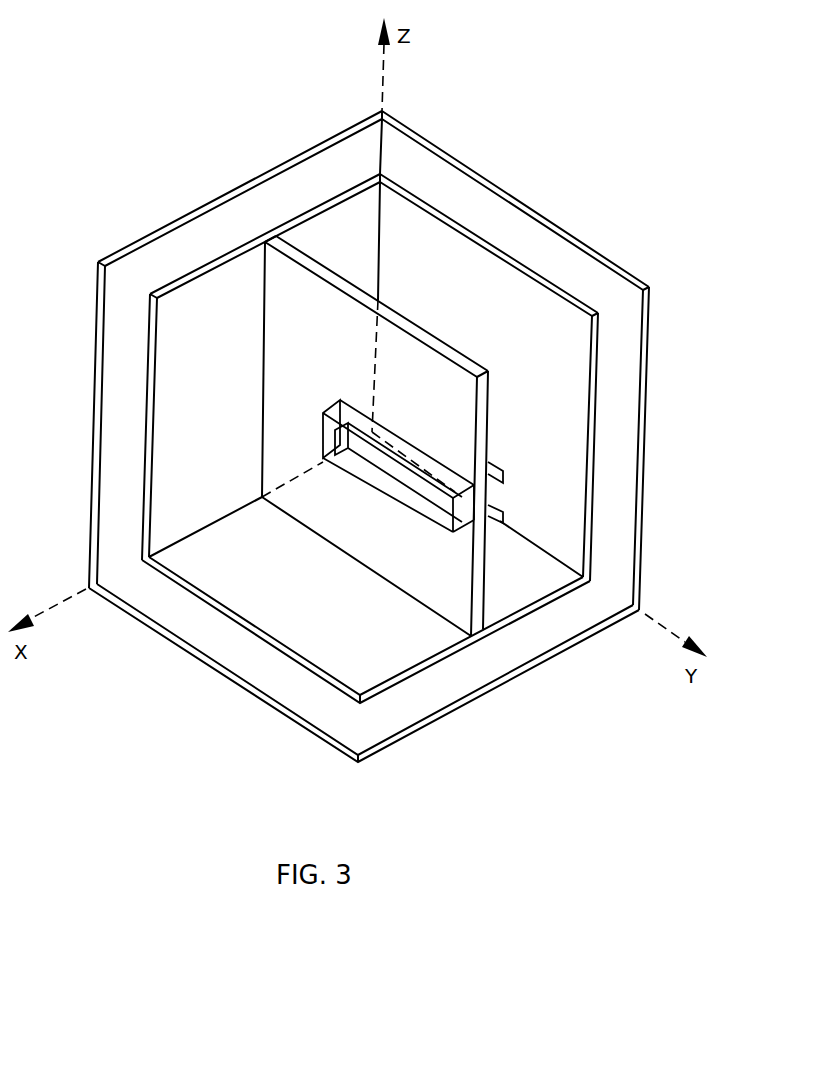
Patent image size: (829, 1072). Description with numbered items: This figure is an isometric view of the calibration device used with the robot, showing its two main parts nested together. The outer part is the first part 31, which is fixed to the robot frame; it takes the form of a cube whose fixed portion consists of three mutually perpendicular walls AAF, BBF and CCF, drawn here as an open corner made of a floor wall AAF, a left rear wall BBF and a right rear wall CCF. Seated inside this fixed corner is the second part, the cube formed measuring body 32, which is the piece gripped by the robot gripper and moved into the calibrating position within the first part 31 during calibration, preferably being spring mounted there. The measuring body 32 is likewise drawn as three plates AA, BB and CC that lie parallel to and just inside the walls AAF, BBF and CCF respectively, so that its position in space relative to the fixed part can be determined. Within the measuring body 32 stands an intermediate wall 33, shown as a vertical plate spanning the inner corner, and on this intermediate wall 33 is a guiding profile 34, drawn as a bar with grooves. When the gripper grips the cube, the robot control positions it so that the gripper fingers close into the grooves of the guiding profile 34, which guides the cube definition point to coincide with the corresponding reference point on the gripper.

The first part 31 is at (415, 436).
The measuring body 32 is at (423, 446).
The intermediate wall 33 is at (430, 337).
The guiding profile 34 is at (360, 488).
The inner bottom plate AA is at (378, 655).
The inner left rear plate BB is at (347, 232).
The inner right rear plate CC is at (542, 318).
The wall AAF is at (478, 658).
The wall BBF is at (219, 218).
The wall CCF is at (612, 462).